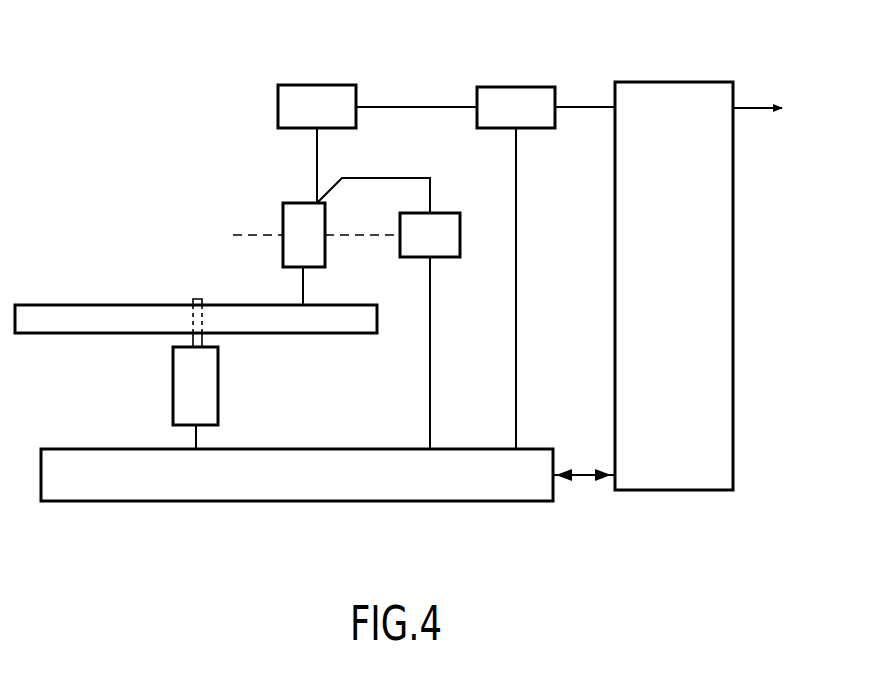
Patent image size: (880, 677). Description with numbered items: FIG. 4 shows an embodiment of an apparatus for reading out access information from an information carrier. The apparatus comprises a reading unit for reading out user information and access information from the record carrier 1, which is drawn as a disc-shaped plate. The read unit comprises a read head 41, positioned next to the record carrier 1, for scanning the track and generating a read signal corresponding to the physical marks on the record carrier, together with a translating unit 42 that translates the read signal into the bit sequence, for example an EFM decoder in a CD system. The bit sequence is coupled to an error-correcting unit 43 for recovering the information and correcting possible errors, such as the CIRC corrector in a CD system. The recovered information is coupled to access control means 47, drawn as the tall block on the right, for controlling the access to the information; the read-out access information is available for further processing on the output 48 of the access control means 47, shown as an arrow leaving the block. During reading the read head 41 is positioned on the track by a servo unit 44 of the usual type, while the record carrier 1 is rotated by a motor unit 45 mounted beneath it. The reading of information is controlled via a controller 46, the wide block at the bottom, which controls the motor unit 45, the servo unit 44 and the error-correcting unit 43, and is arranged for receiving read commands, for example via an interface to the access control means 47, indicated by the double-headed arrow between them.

The record carrier 1 is at (340, 325).
The read head 41 is at (313, 252).
The translating unit 42 is at (313, 95).
The error-correcting unit 43 is at (512, 95).
The servo unit 44 is at (448, 242).
The motor unit 45 is at (206, 393).
The controller 46 is at (392, 446).
The access control means 47 is at (672, 92).
The output 48 is at (753, 103).